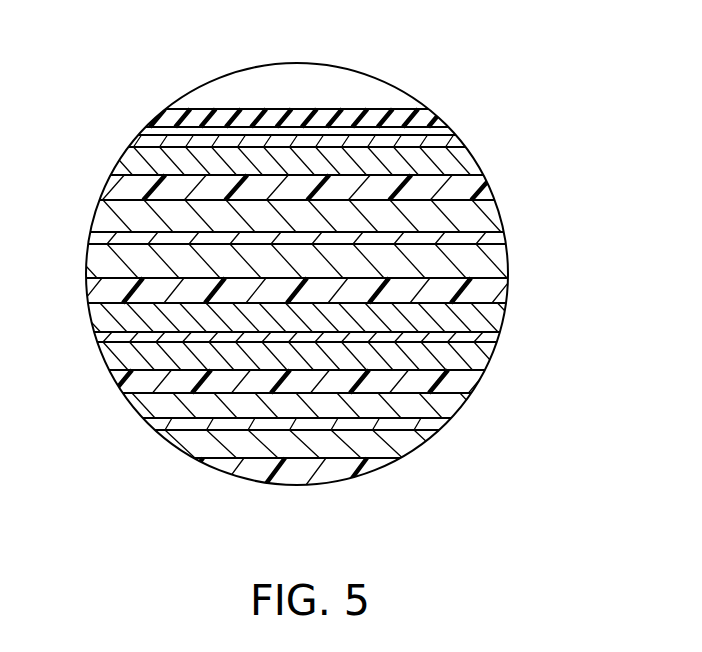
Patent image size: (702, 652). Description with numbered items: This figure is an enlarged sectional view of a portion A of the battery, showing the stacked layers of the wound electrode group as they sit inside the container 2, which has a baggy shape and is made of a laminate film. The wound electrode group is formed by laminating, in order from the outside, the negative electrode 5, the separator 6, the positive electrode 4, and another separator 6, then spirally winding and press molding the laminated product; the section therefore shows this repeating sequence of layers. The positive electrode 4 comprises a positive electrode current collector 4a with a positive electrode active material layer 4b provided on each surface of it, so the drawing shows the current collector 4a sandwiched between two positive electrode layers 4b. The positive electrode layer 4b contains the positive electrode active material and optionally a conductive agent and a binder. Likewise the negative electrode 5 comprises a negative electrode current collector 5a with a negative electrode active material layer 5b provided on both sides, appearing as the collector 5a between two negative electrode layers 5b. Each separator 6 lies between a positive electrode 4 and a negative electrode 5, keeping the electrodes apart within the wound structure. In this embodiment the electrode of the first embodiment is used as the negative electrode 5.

The portion A is at (201, 93).
The container 2 is at (428, 118).
The positive electrode 4 is at (572, 175).
The positive electrode current collector 4a is at (485, 240).
The positive electrode active material layer 4b is at (487, 215).
The negative electrode 5 is at (535, 80).
The negative electrode current collector 5a is at (458, 142).
The negative electrode active material layer 5b is at (457, 157).
The separator 6 is at (126, 184).